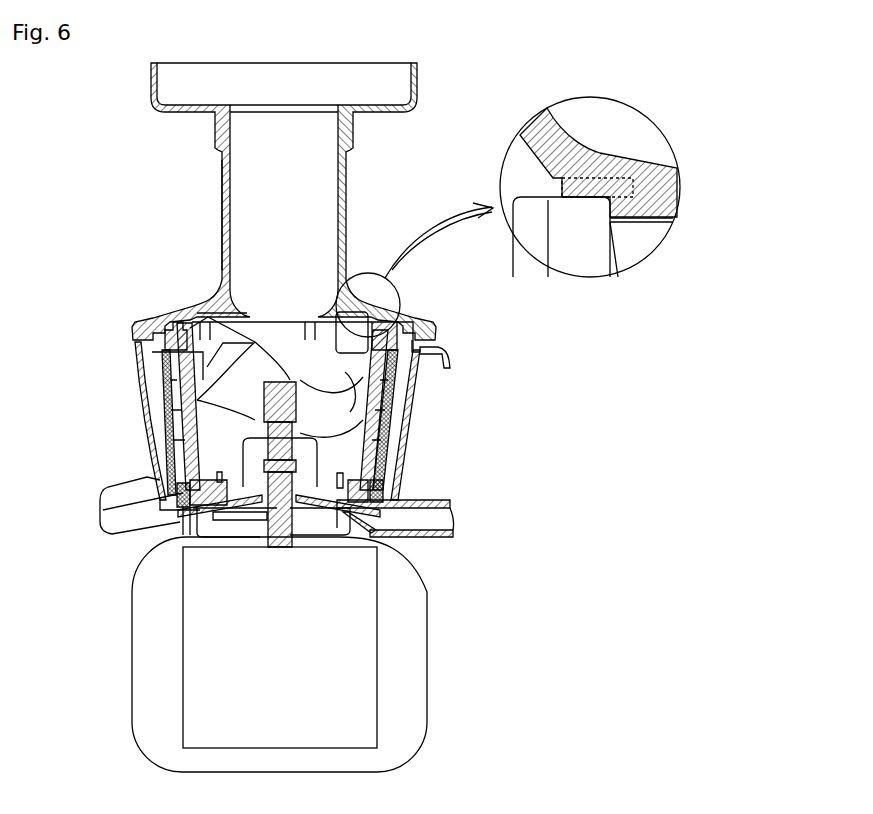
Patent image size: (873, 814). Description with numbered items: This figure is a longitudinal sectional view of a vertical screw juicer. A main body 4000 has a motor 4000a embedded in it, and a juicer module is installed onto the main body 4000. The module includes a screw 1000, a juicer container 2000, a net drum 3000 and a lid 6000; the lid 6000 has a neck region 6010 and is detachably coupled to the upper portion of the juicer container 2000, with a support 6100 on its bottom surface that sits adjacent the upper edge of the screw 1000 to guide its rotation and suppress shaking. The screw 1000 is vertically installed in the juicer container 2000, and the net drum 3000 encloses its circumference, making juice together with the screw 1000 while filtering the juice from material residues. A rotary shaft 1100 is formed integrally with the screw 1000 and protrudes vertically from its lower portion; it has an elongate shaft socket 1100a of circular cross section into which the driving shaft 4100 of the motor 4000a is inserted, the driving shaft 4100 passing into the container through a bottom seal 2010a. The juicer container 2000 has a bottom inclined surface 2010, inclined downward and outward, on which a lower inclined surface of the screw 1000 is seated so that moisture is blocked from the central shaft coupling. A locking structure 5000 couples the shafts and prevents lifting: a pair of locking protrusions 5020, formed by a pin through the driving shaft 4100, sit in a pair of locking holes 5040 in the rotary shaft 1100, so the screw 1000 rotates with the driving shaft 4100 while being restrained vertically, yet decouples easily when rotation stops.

The lid 6000 is at (363, 232).
The lid neck 6010 is at (222, 190).
The support 6100 is at (200, 310).
The screw 1000 is at (392, 378).
The rotary shaft 1100 is at (375, 445).
The shaft socket 1100a is at (410, 330).
The juicer container 2000 is at (143, 395).
The bottom inclined surface 2010 is at (400, 530).
The bottom seal 2010a is at (105, 512).
The net drum 3000 is at (182, 417).
The main body 4000 is at (132, 690).
The motor 4000a is at (200, 616).
The driving shaft 4100 is at (185, 520).
The locking structure 5000 is at (80, 448).
The locking protrusion 5020 is at (200, 463).
The locking hole 5040 is at (205, 481).